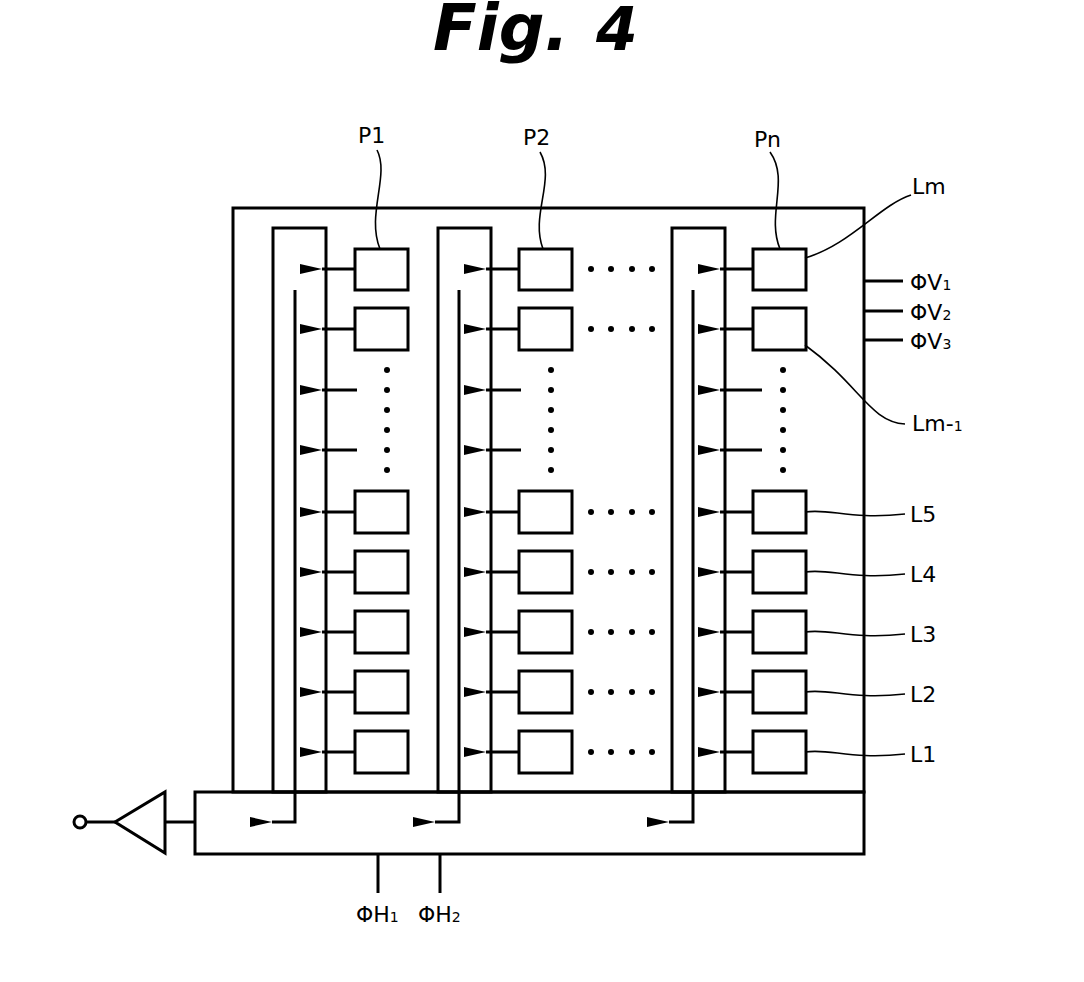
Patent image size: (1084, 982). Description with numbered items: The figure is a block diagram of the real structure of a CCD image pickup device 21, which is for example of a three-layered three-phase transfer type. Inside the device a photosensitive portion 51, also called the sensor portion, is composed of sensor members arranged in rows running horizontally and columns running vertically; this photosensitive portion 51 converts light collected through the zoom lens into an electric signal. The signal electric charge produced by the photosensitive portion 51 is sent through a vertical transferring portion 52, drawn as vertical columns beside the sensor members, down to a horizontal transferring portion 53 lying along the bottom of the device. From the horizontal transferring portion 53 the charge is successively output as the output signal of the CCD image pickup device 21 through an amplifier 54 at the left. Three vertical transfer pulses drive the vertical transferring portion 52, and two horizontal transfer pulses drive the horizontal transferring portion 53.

The CCD image pickup device 21 is at (285, 208).
The photosensitive portion 51 is at (377, 320).
The vertical transferring portion 52 is at (285, 470).
The horizontal transferring portion 53 is at (733, 843).
The amplifier 54 is at (138, 806).